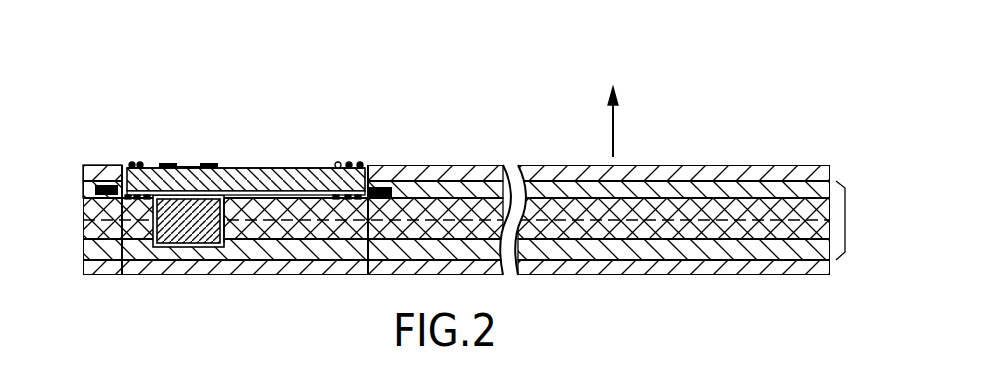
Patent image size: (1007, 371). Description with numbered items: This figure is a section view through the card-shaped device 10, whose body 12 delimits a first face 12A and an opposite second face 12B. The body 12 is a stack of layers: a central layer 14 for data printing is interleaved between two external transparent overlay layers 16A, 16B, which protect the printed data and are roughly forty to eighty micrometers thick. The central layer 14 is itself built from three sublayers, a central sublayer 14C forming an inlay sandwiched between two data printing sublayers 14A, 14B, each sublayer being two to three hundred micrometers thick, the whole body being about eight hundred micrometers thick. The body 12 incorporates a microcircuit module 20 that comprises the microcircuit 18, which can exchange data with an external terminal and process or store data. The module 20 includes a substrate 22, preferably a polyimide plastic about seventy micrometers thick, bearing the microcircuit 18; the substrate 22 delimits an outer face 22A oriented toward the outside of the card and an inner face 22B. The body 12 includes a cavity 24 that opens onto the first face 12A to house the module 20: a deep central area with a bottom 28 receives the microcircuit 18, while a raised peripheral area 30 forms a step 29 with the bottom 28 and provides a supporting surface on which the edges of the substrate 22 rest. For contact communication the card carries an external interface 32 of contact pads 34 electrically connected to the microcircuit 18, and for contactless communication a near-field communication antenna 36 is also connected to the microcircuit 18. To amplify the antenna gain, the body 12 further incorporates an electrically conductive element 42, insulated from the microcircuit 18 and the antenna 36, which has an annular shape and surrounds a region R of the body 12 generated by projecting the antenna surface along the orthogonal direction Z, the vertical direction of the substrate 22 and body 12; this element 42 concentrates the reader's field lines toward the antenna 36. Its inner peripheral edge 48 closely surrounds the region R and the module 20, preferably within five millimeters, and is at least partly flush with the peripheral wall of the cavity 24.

The device 10 is at (462, 137).
The body 12 is at (699, 211).
The first face 12A is at (712, 165).
The second face 12B is at (712, 276).
The central layer 14 is at (845, 218).
The data printing sublayer 14A is at (88, 190).
The data printing sublayer 14B is at (92, 249).
The central sublayer 14C is at (90, 212).
The external transparent layer 16A is at (86, 172).
The external transparent layer 16B is at (88, 268).
The microcircuit 18 is at (185, 246).
The microcircuit module 20 is at (336, 164).
The substrate 22 is at (262, 168).
The outer face 22A is at (297, 168).
The inner face 22B is at (270, 196).
The cavity 24 is at (142, 160).
The bottom 28 is at (215, 248).
The step 29 is at (230, 202).
The peripheral area 30 is at (318, 199).
The external interface 32 is at (188, 163).
The contact pads 34 is at (212, 162).
The near-field communication antenna 36 is at (362, 163).
The electrically conductive element 42 is at (392, 187).
The inner peripheral edge 48 is at (108, 185).
The region R is at (147, 268).
The orthogonal direction Z is at (616, 127).